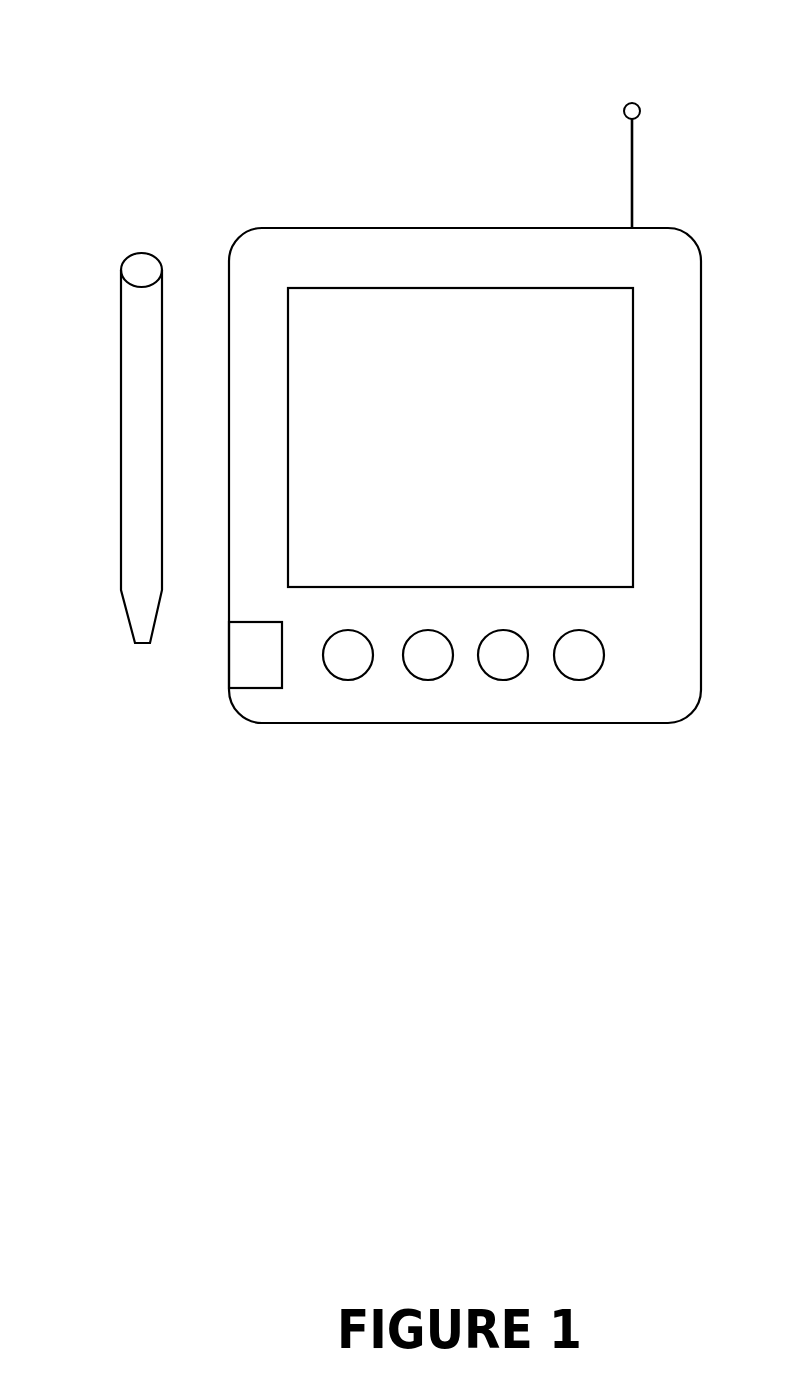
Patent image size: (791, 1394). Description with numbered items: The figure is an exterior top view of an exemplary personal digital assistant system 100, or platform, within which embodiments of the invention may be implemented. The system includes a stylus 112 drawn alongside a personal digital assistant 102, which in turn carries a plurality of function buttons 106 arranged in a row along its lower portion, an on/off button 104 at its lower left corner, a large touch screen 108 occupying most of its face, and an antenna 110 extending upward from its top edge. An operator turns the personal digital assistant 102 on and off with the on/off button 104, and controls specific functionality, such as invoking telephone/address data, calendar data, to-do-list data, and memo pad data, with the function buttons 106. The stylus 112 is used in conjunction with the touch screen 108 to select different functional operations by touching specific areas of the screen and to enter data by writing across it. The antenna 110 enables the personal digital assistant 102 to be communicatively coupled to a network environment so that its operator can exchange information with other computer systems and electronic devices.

The personal digital assistant system 100 is at (84, 39).
The personal digital assistant 102 is at (483, 273).
The on/off button 104 is at (275, 668).
The plurality of function buttons 106 is at (577, 680).
The touch screen 108 is at (479, 450).
The antenna 110 is at (624, 187).
The stylus 112 is at (161, 420).